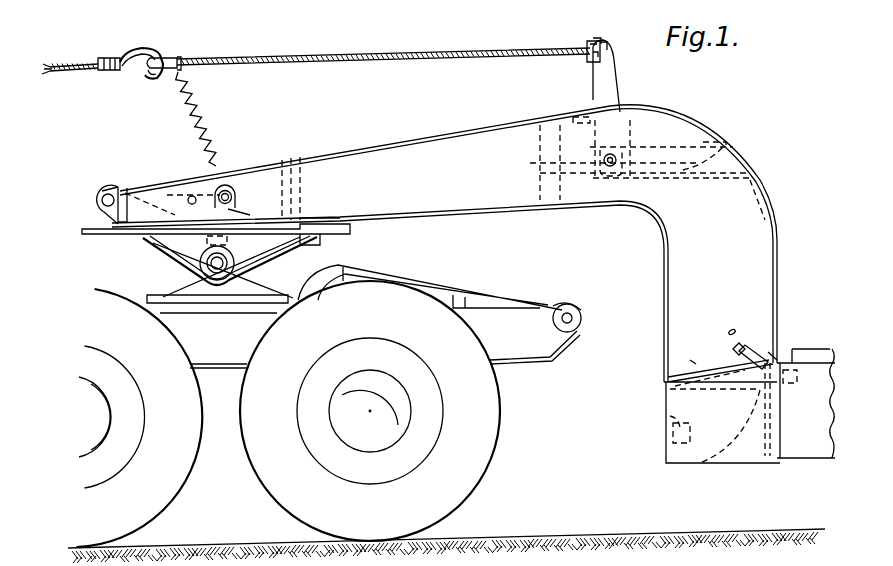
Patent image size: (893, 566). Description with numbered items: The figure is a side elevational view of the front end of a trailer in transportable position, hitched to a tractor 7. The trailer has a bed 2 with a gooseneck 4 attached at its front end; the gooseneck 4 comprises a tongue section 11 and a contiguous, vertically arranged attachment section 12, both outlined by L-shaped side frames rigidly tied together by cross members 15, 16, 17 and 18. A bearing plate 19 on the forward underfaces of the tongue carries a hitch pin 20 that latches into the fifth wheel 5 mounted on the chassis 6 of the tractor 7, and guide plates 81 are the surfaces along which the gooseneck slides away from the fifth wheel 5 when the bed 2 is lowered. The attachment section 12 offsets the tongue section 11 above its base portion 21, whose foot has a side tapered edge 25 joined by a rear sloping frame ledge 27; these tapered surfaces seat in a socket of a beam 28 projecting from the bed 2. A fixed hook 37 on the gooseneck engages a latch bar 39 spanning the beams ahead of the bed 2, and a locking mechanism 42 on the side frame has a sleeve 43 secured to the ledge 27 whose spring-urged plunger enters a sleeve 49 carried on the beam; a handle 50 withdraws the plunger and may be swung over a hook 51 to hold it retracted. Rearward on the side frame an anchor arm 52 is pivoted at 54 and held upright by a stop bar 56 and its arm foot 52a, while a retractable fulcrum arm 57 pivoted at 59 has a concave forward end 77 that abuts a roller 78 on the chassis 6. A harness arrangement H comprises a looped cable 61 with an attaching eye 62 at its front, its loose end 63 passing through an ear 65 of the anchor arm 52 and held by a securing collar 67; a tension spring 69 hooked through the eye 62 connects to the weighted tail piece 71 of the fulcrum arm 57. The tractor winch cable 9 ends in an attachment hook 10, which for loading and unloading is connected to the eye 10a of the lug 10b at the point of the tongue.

The harness arrangement H is at (370, 55).
The bed 2 is at (806, 446).
The gooseneck 4 is at (467, 232).
The fifth wheel 5 is at (118, 255).
The chassis 6 is at (543, 340).
The tractor 7 is at (501, 407).
The cable 9 is at (77, 63).
The attachment hook 10 is at (157, 50).
The eye 10a is at (101, 202).
The lug 10b is at (100, 190).
The tongue section 11 is at (382, 148).
The attachment section 12 is at (778, 270).
The cross member 15 is at (119, 186).
The cross member 16 is at (537, 143).
The cross member 17 is at (568, 210).
The cross member 18 is at (766, 195).
The bearing plate 19 is at (310, 198).
The hitch pin 20 is at (300, 232).
The base portion 21 is at (693, 362).
The side tapered edge 25 is at (665, 370).
The rear sloping frame ledge 27 is at (735, 389).
The beam 28 is at (740, 455).
The fixed hook 37 is at (698, 456).
The latch bar 39 is at (671, 434).
The locking mechanism 42 is at (785, 343).
The sleeve 43 is at (765, 349).
The sleeve 49 is at (797, 383).
The handle 50 is at (734, 348).
The hook 51 is at (732, 327).
The anchor arm 52 is at (610, 70).
The arm foot 52a is at (621, 164).
The pivot 54 is at (612, 158).
The stop bar 56 is at (583, 117).
The fulcrum arm 57 is at (173, 194).
The pivot 59 is at (218, 178).
The looped cable 61 is at (277, 57).
The attaching eye 62 is at (168, 73).
The loose end 63 is at (545, 47).
The ear 65 is at (595, 38).
The securing collar 67 is at (607, 43).
The tension spring 69 is at (200, 102).
The tail piece 71 is at (234, 211).
The concave forward end 77 is at (125, 193).
The roller 78 is at (570, 303).
The guide plate 81 is at (440, 280).